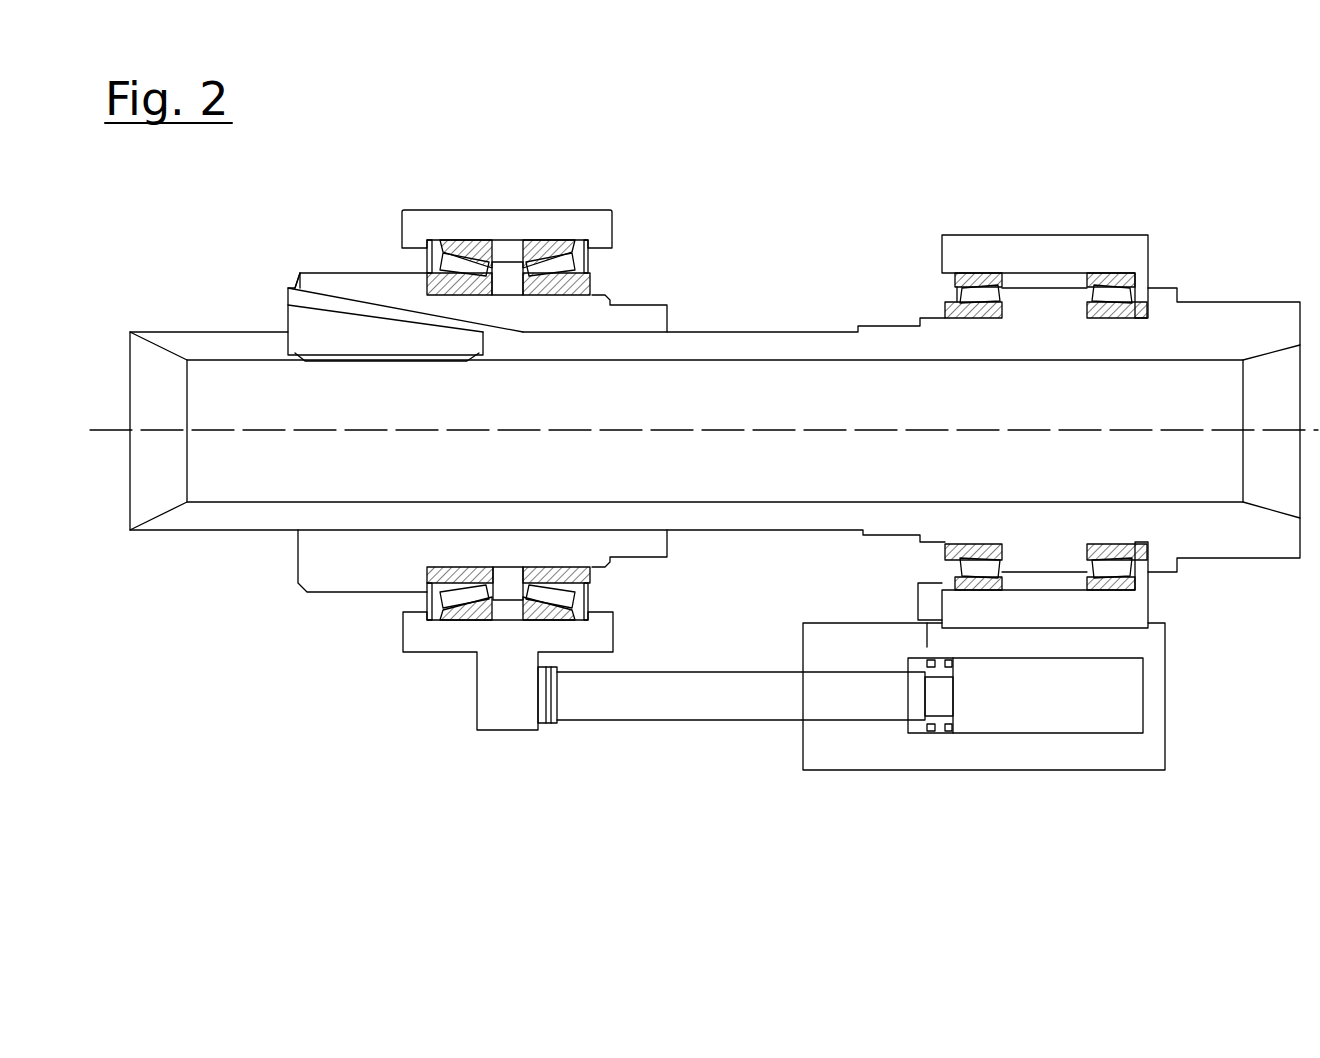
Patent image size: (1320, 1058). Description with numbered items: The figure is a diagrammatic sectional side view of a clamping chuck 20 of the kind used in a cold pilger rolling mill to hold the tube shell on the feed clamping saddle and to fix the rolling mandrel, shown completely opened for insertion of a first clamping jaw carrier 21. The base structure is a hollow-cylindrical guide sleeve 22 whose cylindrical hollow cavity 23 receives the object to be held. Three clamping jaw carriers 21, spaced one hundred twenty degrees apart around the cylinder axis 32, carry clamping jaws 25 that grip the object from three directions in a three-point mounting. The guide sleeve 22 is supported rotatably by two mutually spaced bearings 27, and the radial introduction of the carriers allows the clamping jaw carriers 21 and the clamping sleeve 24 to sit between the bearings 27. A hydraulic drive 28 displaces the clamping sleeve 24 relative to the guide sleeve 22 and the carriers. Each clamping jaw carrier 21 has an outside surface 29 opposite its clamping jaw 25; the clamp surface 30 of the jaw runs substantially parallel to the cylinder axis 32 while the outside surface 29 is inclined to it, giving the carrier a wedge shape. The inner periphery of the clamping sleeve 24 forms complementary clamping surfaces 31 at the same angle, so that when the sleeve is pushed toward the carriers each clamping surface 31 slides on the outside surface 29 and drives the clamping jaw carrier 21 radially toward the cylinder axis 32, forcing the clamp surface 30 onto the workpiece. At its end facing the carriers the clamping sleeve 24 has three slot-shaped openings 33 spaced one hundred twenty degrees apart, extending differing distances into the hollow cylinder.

The clamping chuck 20 is at (666, 211).
The clamping jaw carrier 21 is at (300, 328).
The guide sleeve 22 is at (770, 348).
The cylindrical hollow cavity 23 is at (1155, 391).
The clamping sleeve 24 is at (380, 290).
The clamping jaw 25 is at (347, 358).
The bearings 27 is at (1157, 598).
The hydraulic drive 28 is at (873, 776).
The outside surface 29 is at (321, 284).
The clamp surface 30 is at (313, 372).
The clamping surfaces 31 is at (397, 312).
The cylinder axis 32 is at (872, 430).
The slot-shaped openings 33 is at (300, 266).